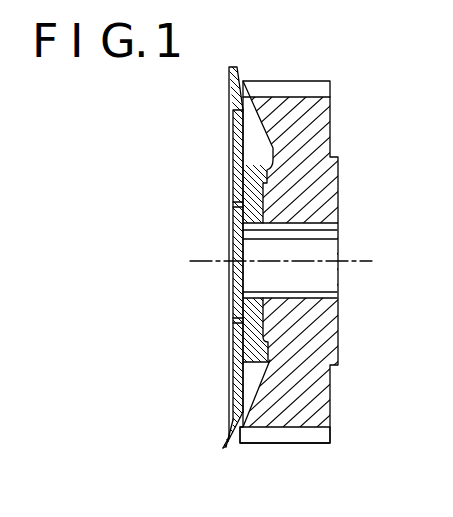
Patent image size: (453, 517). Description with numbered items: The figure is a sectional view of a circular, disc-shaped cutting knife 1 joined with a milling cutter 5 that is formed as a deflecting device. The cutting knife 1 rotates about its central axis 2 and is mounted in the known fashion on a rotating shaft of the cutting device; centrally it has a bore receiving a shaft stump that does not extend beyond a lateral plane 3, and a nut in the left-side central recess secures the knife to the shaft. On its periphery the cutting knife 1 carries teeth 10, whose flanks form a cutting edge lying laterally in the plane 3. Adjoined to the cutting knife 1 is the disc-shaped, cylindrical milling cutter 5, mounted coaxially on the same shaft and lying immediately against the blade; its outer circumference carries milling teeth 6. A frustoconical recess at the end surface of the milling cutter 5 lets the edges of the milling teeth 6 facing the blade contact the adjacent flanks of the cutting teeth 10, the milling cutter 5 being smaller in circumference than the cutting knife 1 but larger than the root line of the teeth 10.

The cutting knife 1 is at (207, 285).
The central axis 2 is at (345, 262).
The plane 3 is at (228, 88).
The milling cutter 5 is at (318, 330).
The milling teeth 6 is at (308, 435).
The teeth 10 is at (225, 450).